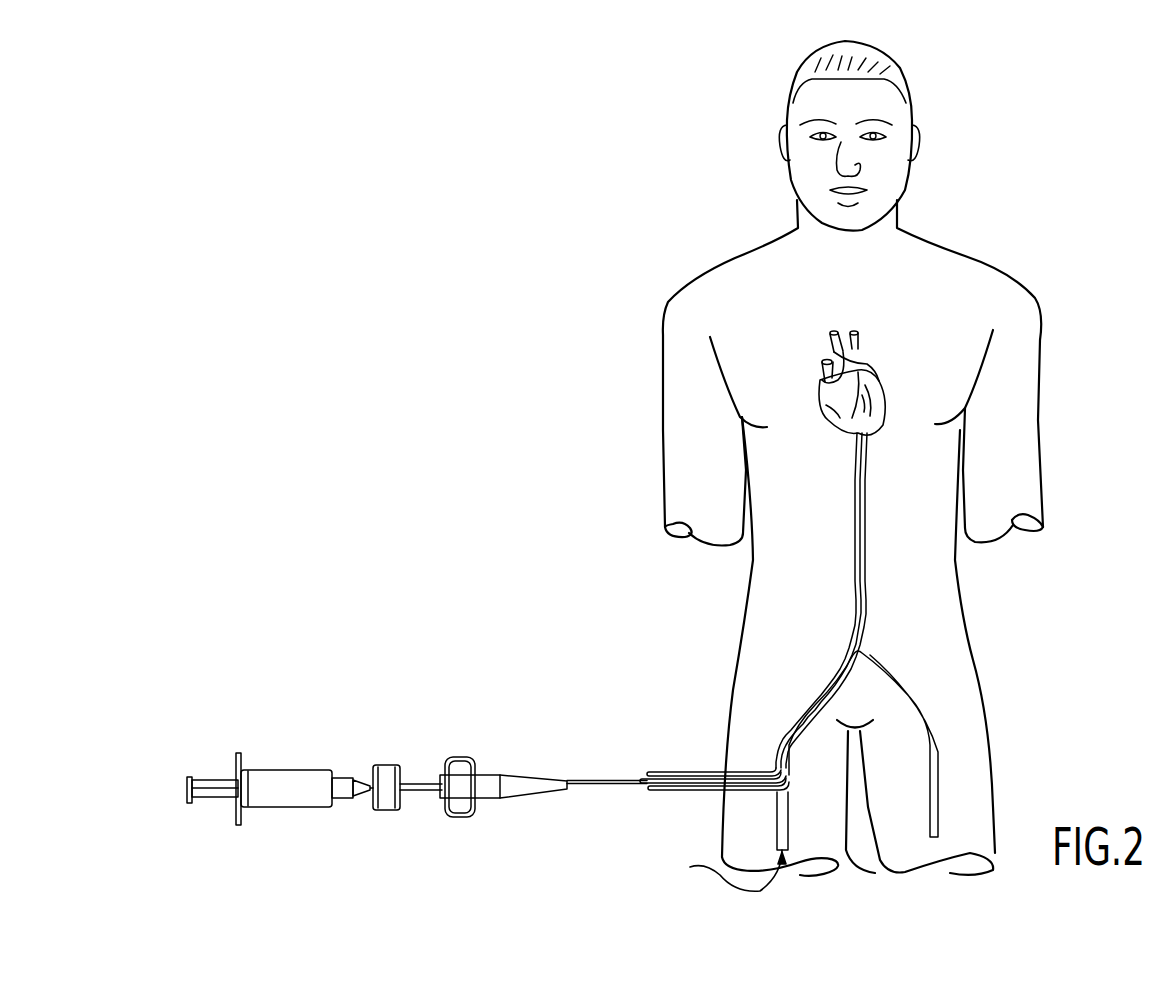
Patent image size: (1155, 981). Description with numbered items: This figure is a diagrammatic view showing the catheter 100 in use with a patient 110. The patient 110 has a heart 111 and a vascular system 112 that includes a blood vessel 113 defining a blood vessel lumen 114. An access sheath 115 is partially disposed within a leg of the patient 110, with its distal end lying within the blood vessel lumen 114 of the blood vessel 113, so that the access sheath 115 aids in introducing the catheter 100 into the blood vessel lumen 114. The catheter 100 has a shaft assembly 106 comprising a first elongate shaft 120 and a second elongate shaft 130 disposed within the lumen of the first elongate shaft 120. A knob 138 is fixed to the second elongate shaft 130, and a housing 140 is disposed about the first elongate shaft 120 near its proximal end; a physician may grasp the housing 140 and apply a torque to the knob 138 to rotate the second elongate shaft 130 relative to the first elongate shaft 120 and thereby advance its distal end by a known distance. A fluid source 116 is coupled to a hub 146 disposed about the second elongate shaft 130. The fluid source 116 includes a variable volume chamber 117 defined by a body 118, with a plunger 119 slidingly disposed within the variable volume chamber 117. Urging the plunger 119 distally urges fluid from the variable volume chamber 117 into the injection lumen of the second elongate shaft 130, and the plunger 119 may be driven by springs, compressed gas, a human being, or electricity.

The catheter 100 is at (473, 731).
The shaft assembly 106 is at (628, 777).
The patient 110 is at (980, 273).
The heart 111 is at (868, 392).
The vascular system 112 is at (904, 477).
The blood vessel 113 is at (817, 800).
The blood vessel lumen 114 is at (718, 870).
The access sheath 115 is at (713, 771).
The fluid source 116 is at (283, 726).
The variable volume chamber 117 is at (265, 772).
The body 118 is at (311, 779).
The plunger 119 is at (213, 778).
The first elongate shaft 120 is at (588, 779).
The second elongate shaft 130 is at (420, 783).
The knob 138 is at (388, 764).
The housing 140 is at (488, 778).
The hub 146 is at (364, 784).